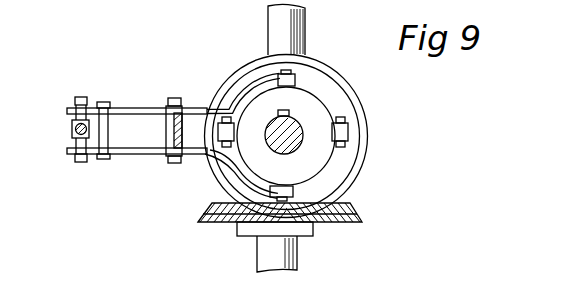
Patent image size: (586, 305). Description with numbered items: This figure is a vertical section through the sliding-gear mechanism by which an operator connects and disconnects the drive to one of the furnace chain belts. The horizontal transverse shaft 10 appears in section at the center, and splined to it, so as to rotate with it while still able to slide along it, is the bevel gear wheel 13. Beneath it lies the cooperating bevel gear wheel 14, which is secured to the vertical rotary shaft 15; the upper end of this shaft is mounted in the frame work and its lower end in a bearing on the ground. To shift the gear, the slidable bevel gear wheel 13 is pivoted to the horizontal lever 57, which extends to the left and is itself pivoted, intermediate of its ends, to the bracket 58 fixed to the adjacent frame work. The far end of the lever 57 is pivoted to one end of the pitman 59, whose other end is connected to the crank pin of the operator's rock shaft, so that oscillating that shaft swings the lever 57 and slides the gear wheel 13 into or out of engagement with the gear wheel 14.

The horizontal transverse shaft 10 is at (293, 136).
The bevel gear wheel 13 is at (262, 59).
The bevel gear wheel 14 is at (206, 220).
The vertical rotary shaft 15 is at (282, 18).
The horizontal lever 57 is at (150, 103).
The bracket 58 is at (172, 121).
The pitman 59 is at (72, 129).